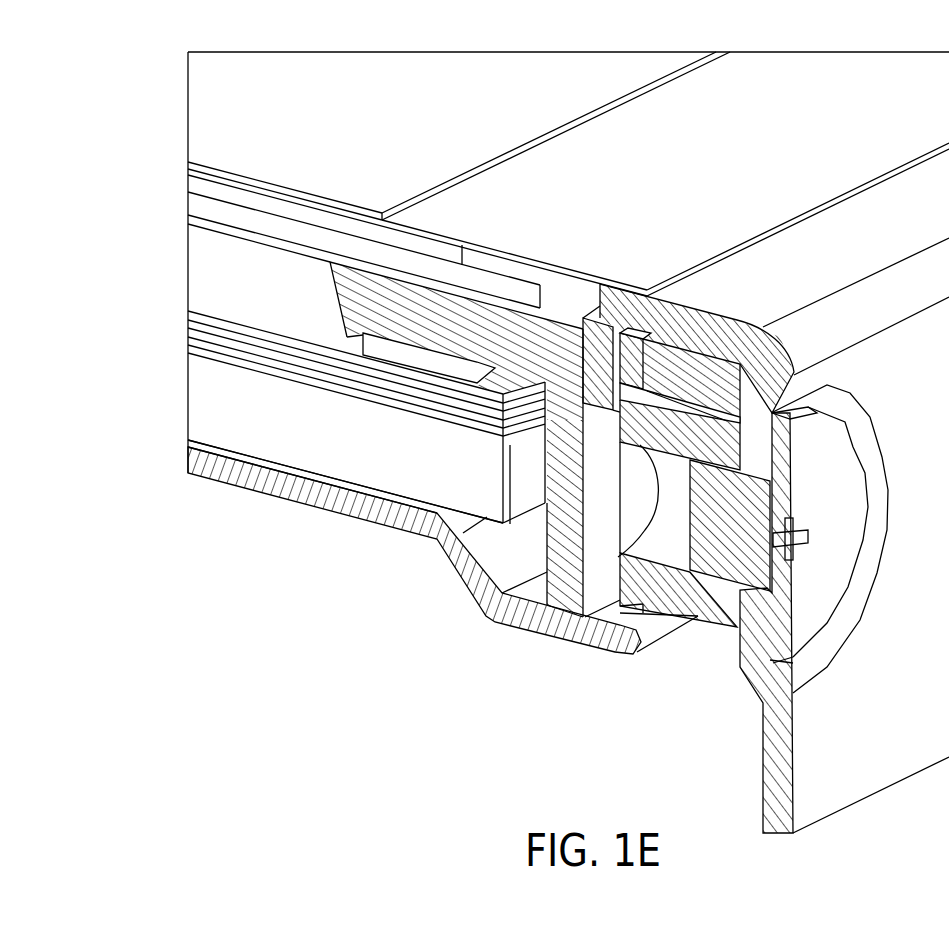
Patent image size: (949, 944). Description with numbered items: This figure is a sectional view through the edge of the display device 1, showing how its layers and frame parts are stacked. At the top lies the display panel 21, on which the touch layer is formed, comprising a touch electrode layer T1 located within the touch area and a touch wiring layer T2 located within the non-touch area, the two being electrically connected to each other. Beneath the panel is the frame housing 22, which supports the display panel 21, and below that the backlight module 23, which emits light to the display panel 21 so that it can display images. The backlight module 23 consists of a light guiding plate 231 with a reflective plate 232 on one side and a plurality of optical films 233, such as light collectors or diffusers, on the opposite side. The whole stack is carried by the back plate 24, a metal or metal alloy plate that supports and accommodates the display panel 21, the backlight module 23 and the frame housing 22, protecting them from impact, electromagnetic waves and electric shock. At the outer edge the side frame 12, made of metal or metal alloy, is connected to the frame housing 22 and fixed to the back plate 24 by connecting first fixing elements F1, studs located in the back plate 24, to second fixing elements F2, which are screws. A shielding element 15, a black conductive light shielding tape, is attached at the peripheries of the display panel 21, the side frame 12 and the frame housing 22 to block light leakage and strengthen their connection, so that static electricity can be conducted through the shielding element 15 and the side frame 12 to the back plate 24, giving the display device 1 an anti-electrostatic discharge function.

The display device 1 is at (152, 74).
The side frame 12 is at (780, 742).
The shielding element 15 is at (563, 274).
The display panel 21 is at (542, 180).
The touch electrode layer T1 is at (316, 207).
The touch wiring layer T2 is at (425, 238).
The frame housing 22 is at (335, 287).
The backlight module 23 is at (301, 414).
The light guiding plate 231 is at (215, 404).
The reflective plate 232 is at (309, 475).
The optical films 233 is at (172, 305).
The back plate 24 is at (190, 463).
The first fixing elements F1 is at (687, 598).
The second fixing elements F2 is at (828, 583).